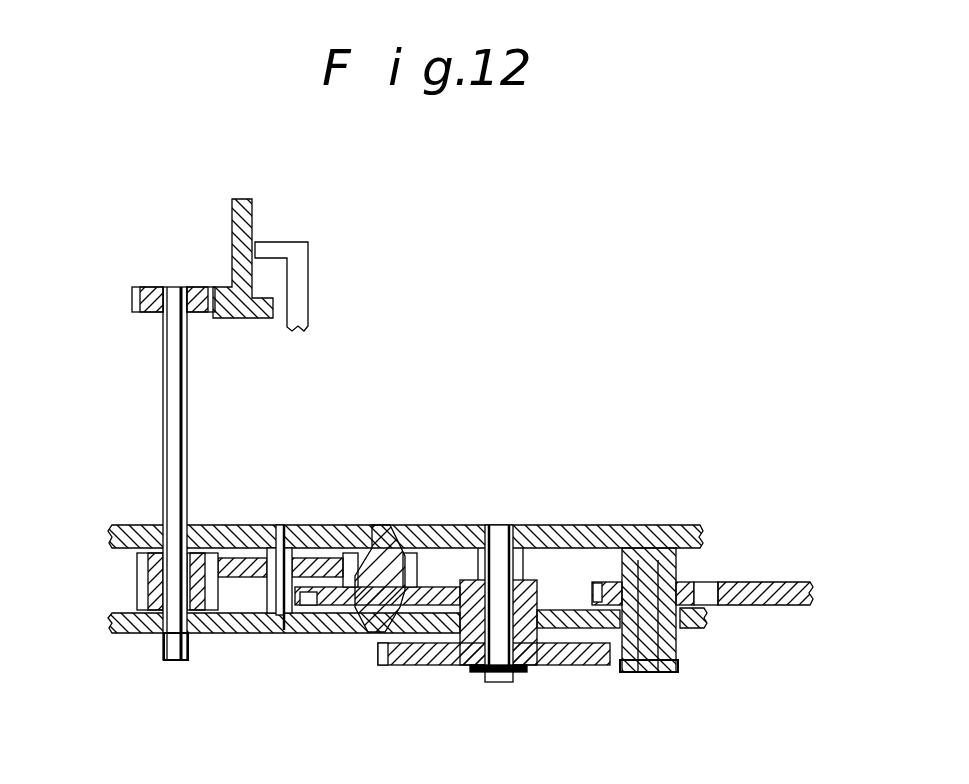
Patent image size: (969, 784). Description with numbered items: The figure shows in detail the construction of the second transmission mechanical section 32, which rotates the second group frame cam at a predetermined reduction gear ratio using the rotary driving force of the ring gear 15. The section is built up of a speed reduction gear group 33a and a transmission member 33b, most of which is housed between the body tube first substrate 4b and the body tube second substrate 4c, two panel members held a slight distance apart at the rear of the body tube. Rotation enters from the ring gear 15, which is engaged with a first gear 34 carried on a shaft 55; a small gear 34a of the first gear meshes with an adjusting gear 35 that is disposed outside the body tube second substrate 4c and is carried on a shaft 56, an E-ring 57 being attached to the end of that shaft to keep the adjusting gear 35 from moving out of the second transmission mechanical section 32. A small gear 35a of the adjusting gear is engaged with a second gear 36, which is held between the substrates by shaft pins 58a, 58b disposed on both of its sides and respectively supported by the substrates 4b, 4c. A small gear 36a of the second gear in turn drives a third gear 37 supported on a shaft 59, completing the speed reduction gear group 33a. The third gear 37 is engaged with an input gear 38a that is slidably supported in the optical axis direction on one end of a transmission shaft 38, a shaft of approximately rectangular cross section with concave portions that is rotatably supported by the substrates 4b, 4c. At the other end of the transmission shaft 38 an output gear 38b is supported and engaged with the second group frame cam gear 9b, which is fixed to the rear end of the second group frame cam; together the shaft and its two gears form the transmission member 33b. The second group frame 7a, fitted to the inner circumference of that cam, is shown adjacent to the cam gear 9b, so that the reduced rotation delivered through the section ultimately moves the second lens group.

The body tube first substrate 4b is at (108, 536).
The body tube second substrate 4c is at (128, 634).
The second group frame 7a is at (298, 298).
The second group frame cam gear 9b is at (232, 233).
The ring gear 15 is at (783, 582).
The second transmission mechanical section 32 is at (434, 490).
The speed reduction gear group 33a is at (597, 676).
The transmission member 33b is at (154, 430).
The first gear 34 is at (680, 582).
The small gear of the first gear 34a is at (680, 660).
The adjusting gear 35 is at (428, 655).
The small gear of the adjusting gear 35a is at (545, 600).
The second gear 36 is at (442, 596).
The small gear of the second gear 36a is at (352, 552).
The third gear 37 is at (238, 557).
The transmission shaft 38 is at (168, 363).
The input gear 38a is at (137, 583).
The output gear 38b is at (155, 297).
The shaft 55 is at (653, 660).
The shaft 56 is at (523, 652).
The E-ring 57 is at (476, 674).
The shaft pin 58a is at (374, 546).
The shaft pin 58b is at (375, 633).
The shaft 59 is at (255, 633).